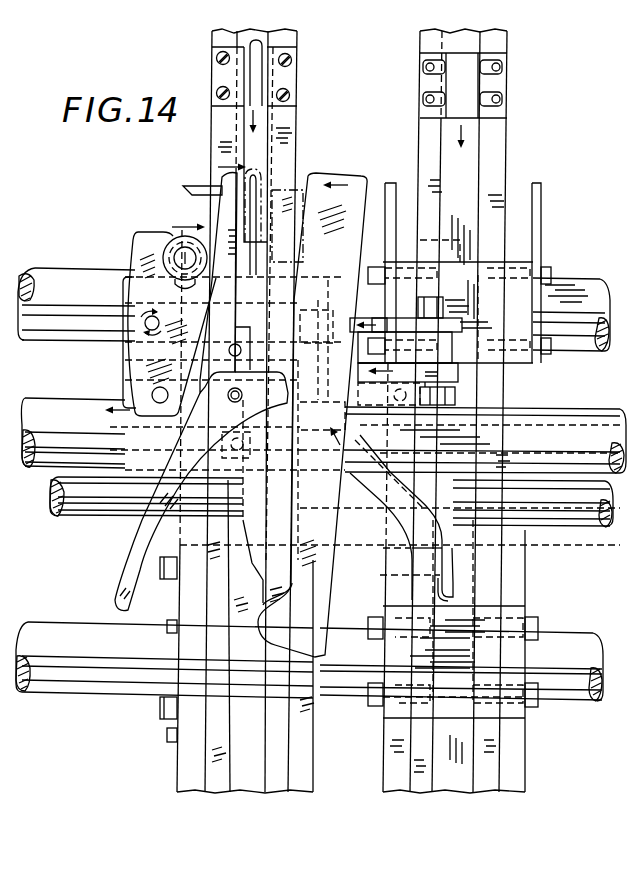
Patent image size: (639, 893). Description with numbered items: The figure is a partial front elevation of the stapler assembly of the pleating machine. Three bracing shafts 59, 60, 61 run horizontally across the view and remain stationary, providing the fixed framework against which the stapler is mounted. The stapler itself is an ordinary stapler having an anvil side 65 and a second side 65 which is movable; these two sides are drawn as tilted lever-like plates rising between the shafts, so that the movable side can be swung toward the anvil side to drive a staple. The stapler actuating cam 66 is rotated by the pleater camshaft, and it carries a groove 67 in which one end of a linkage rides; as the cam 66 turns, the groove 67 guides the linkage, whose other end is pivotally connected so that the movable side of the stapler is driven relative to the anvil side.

The bracing shaft 59 is at (571, 693).
The bracing shaft 60 is at (578, 288).
The bracing shaft 61 is at (590, 420).
The stapler side 65 is at (225, 218).
The stapler actuating cam 66 is at (452, 548).
The groove 67 is at (455, 590).